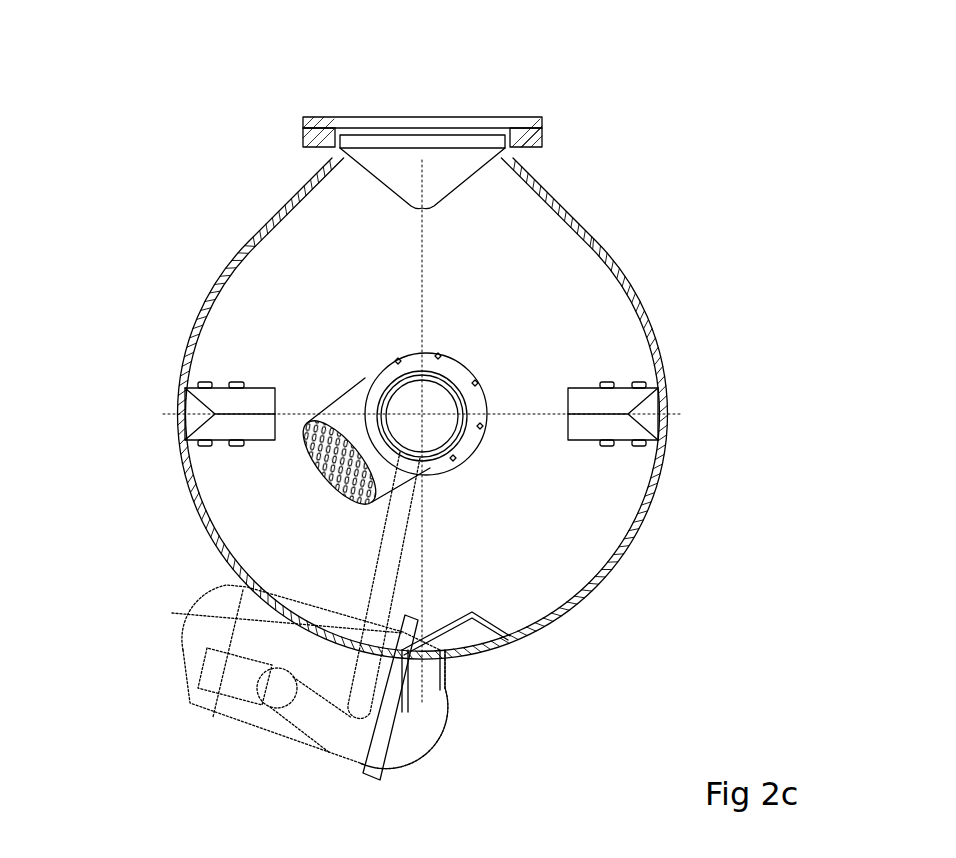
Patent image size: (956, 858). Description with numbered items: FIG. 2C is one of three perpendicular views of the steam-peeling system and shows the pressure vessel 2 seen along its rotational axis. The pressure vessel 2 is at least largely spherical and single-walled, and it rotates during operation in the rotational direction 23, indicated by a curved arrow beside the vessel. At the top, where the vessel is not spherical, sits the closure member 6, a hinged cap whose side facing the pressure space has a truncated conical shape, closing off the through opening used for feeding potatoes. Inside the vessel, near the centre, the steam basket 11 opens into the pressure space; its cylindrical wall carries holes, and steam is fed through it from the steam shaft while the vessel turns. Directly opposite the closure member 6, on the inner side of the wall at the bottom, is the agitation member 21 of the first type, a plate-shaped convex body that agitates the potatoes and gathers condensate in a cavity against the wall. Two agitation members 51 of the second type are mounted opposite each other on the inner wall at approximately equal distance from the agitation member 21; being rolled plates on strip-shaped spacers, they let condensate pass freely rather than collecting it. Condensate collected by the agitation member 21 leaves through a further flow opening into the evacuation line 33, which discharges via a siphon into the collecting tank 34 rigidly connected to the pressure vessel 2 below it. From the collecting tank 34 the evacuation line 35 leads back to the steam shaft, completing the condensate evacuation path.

The pressure vessel 2 is at (661, 258).
The closure member 6 is at (445, 163).
The agitation members of the second type 51 is at (253, 365).
The steam basket 11 is at (359, 506).
The evacuation line 35 is at (380, 570).
The agitation member of the first type 21 is at (479, 586).
The rotational direction 23 is at (597, 640).
The collecting tank 34 is at (212, 622).
The evacuation line 33 is at (425, 720).